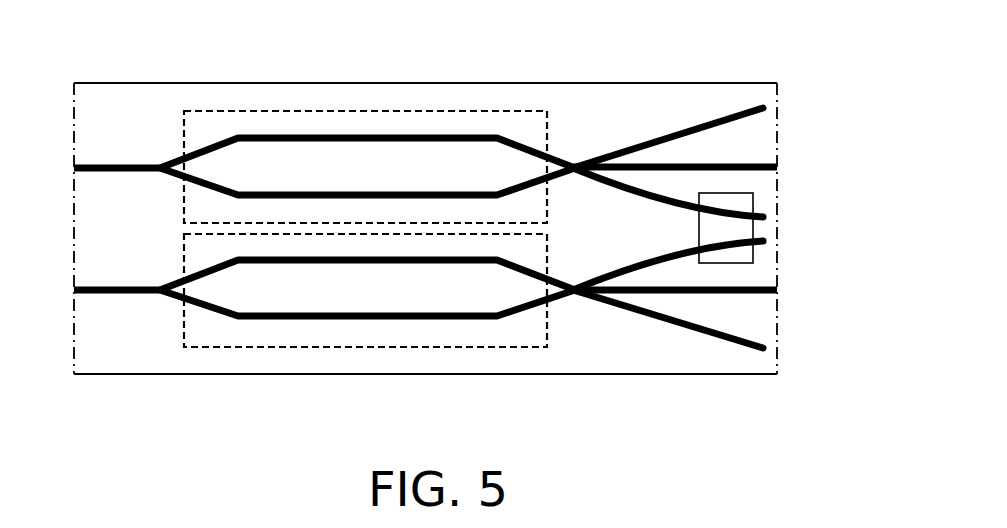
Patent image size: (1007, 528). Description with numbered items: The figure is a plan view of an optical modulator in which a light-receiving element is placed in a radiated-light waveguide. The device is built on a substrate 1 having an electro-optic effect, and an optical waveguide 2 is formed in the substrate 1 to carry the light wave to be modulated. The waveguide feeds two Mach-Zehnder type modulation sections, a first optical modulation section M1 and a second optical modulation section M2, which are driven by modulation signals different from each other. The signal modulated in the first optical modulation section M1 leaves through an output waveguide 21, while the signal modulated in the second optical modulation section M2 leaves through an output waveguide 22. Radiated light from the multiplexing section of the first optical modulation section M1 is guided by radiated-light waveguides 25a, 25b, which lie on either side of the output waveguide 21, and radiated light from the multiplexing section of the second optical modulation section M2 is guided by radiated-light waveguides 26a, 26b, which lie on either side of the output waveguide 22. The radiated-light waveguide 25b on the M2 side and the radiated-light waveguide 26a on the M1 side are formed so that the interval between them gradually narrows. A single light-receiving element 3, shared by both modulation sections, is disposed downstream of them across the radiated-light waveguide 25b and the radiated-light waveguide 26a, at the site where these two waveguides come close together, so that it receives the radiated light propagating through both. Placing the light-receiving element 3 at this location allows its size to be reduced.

The substrate 1 is at (580, 108).
The optical waveguide 2 is at (109, 148).
The light-receiving element 3 is at (729, 193).
The output waveguide 21 is at (747, 162).
The output waveguide 22 is at (752, 295).
The radiated-light waveguide 25a is at (632, 143).
The radiated-light waveguide 25b is at (640, 186).
The radiated-light waveguide 26a is at (645, 270).
The radiated-light waveguide 26b is at (633, 315).
The first optical modulation section M1 is at (442, 110).
The second optical modulation section M2 is at (443, 349).